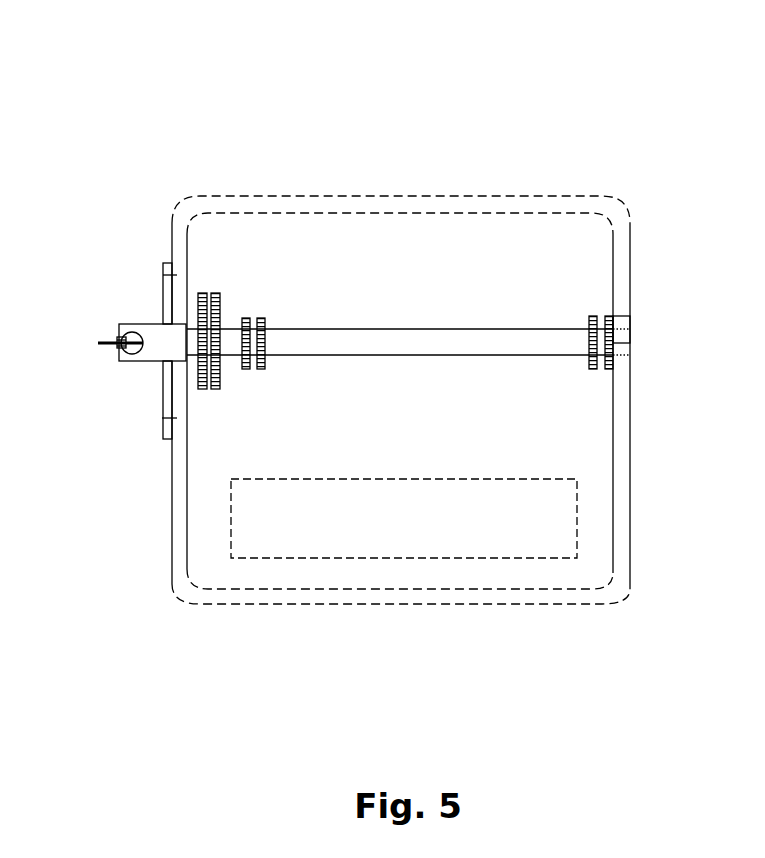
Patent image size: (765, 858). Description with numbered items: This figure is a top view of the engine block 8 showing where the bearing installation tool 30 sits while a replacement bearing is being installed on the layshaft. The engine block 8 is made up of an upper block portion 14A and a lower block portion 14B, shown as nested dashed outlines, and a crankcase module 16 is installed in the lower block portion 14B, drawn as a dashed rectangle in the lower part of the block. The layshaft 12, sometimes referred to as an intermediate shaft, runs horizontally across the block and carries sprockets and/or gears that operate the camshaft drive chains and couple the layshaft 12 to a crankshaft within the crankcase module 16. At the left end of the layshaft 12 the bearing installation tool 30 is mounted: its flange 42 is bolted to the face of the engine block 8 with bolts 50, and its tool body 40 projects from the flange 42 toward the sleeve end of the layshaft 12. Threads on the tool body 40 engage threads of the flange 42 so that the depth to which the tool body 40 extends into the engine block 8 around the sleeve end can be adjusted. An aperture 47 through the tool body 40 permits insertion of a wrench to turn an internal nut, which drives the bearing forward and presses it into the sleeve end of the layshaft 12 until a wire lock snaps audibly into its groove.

The engine block 8 is at (590, 77).
The layshaft 12 is at (438, 332).
The upper block portion 14A is at (632, 275).
The lower block portion 14B is at (632, 445).
The crankcase module 16 is at (247, 512).
The bearing installation tool 30 is at (107, 334).
The tool body 40 is at (118, 354).
The flange 42 is at (162, 400).
The aperture 47 is at (117, 337).
The bolts 50 is at (163, 274).